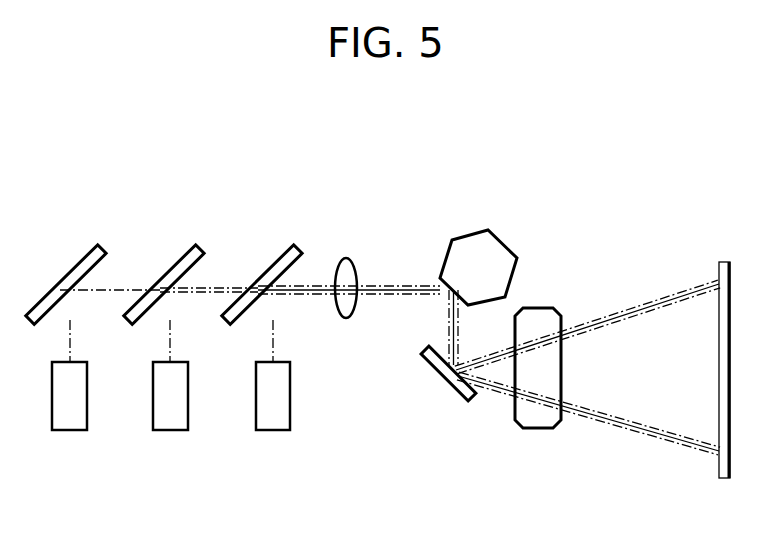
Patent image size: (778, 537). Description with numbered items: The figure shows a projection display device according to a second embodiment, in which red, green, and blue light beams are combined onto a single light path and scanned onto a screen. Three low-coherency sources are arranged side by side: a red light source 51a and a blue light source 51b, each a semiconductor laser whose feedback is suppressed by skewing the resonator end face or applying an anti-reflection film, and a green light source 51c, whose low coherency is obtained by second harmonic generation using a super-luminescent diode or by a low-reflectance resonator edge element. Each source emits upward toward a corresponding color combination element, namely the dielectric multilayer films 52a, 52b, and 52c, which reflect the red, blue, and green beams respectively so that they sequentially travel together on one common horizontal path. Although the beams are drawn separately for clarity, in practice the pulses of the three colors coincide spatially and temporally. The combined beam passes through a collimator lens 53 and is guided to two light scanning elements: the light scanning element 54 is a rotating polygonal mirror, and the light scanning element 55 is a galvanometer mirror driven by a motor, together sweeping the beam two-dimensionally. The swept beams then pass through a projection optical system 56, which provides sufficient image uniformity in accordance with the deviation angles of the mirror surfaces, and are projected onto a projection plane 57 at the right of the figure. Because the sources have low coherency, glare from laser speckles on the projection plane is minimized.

The red light source 51a is at (70, 430).
The blue light source 51b is at (170, 430).
The green light source 51c is at (273, 430).
The dielectric multilayer film 52a is at (105, 252).
The dielectric multilayer film 52b is at (204, 253).
The dielectric multilayer film 52c is at (307, 252).
The collimator lens 53 is at (346, 318).
The light scanning element 54 is at (501, 242).
The light scanning element 55 is at (457, 388).
The projection optical system 56 is at (538, 422).
The projection plane 57 is at (717, 470).